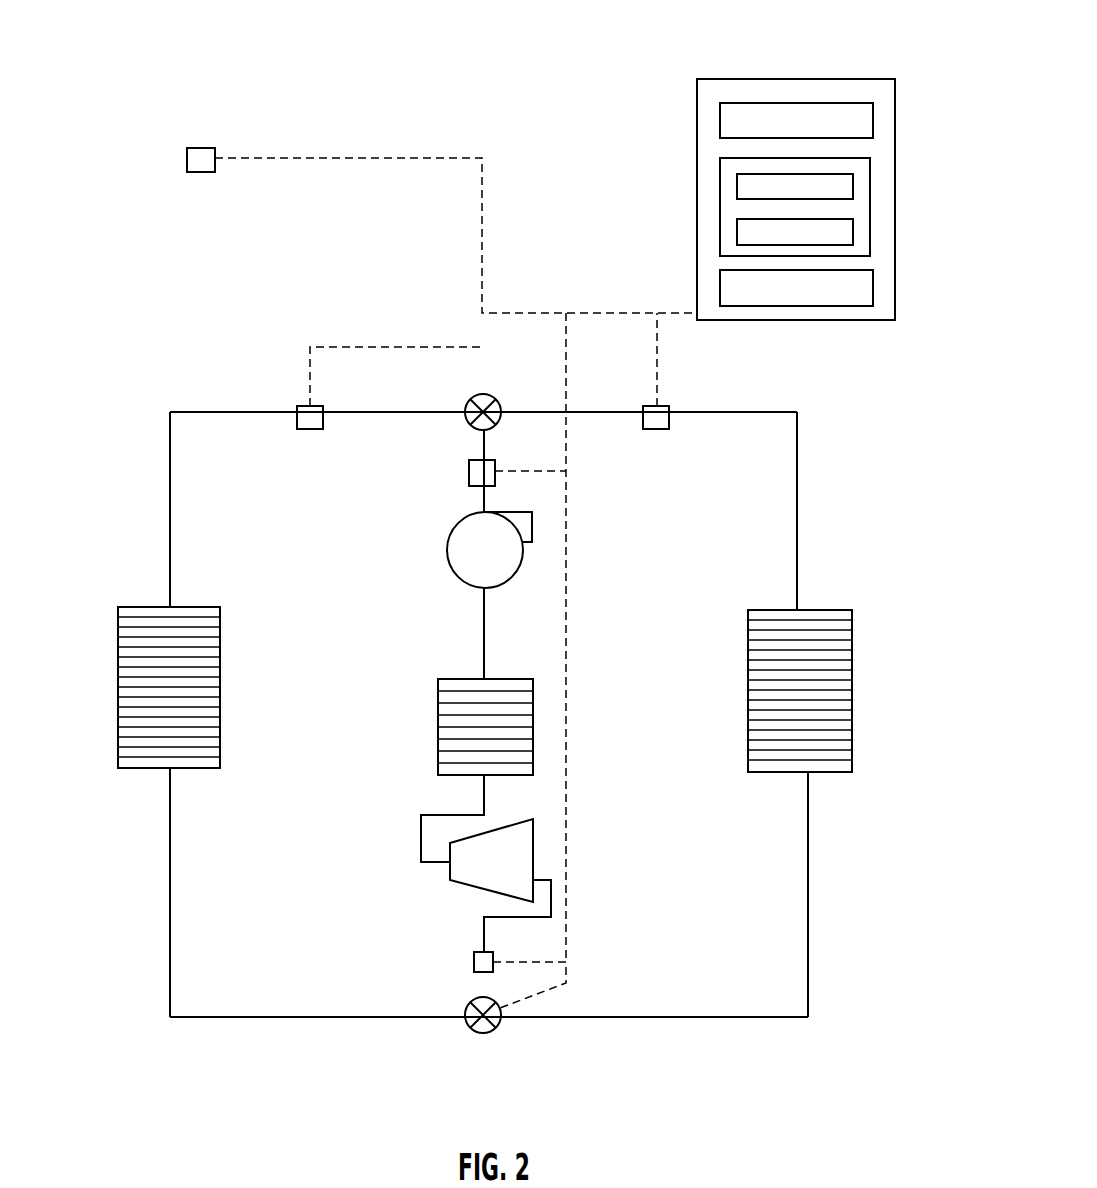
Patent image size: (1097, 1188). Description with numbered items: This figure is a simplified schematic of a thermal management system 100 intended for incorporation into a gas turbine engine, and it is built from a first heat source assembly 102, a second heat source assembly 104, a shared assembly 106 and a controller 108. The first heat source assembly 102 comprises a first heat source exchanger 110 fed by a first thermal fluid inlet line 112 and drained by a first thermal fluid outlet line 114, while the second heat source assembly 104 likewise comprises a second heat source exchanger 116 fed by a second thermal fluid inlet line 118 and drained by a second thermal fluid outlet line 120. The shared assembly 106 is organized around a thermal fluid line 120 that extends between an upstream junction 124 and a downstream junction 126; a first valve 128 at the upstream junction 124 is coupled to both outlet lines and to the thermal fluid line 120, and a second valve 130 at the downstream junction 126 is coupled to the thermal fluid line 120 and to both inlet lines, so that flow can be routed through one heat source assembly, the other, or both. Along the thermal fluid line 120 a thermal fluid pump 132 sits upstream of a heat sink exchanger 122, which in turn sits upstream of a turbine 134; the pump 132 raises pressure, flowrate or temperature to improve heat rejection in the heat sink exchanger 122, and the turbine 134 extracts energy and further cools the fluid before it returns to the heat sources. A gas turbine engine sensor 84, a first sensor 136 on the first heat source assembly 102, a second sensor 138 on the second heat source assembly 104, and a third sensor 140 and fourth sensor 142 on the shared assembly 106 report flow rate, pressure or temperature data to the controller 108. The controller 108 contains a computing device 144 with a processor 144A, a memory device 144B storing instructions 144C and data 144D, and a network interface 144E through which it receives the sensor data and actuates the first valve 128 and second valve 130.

The gas turbine engine sensor 84 is at (203, 148).
The thermal management system 100 is at (126, 262).
The first heat source assembly 102 is at (106, 446).
The second heat source assembly 104 is at (878, 488).
The shared assembly 106 is at (382, 564).
The controller 108 is at (704, 44).
The first heat source exchanger 110 is at (118, 676).
The first thermal fluid inlet line 112 is at (288, 1017).
The first thermal fluid outlet line 114 is at (170, 506).
The second heat source exchanger 116 is at (852, 690).
The second thermal fluid inlet line 118 is at (808, 918).
The thermal fluid line 120 is at (797, 530).
The heat sink exchanger 122 is at (438, 728).
The upstream junction 124 is at (466, 394).
The downstream junction 126 is at (496, 1040).
The first valve 128 is at (498, 411).
The second valve 130 is at (498, 1026).
The thermal fluid pump 132 is at (453, 538).
The turbine 134 is at (468, 880).
The first sensor 136 is at (298, 407).
The second sensor 138 is at (668, 407).
The third sensor 140 is at (494, 466).
The fourth sensor 142 is at (474, 968).
The computing device 144 is at (882, 79).
The processor 144A is at (796, 120).
The memory device 144B is at (870, 162).
The instructions 144C is at (853, 186).
The data 144D is at (853, 232).
The network interface 144E is at (796, 288).